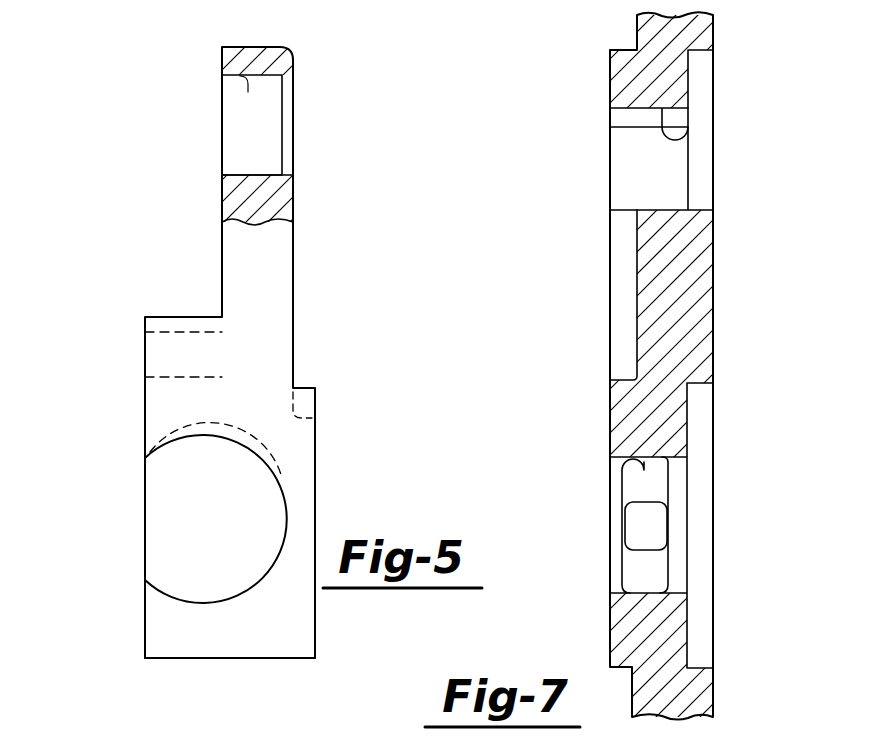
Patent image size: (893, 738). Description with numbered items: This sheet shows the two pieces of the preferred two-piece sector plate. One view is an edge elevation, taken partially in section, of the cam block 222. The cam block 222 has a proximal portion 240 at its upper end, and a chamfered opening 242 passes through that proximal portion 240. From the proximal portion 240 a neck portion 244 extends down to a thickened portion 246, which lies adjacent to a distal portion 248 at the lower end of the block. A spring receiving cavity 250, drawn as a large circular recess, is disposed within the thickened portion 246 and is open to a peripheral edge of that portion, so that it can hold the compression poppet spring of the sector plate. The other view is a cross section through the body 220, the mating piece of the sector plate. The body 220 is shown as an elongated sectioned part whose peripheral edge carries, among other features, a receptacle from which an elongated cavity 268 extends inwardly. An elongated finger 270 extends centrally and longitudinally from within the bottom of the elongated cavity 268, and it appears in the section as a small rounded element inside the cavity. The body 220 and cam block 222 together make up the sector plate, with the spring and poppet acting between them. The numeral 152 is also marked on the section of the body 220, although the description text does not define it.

In FIG. 7, the drive chain 152 is at (688, 138).
In FIG. 7, the cam body 220 is at (758, 238).
In FIG. 5, the cam block 222 is at (98, 465).
In FIG. 5, the proximal portion 240 is at (237, 62).
In FIG. 5, the chamfered opening 242 is at (248, 84).
In FIG. 5, the neck portion 244 is at (283, 209).
In FIG. 5, the thickened portion 246 is at (168, 403).
In FIG. 5, the distal portion 248 is at (163, 618).
In FIG. 5, the spring receiving cavity 250 is at (168, 517).
In FIG. 7, the elongated cavity 268 is at (622, 470).
In FIG. 7, the elongated finger 270 is at (638, 517).